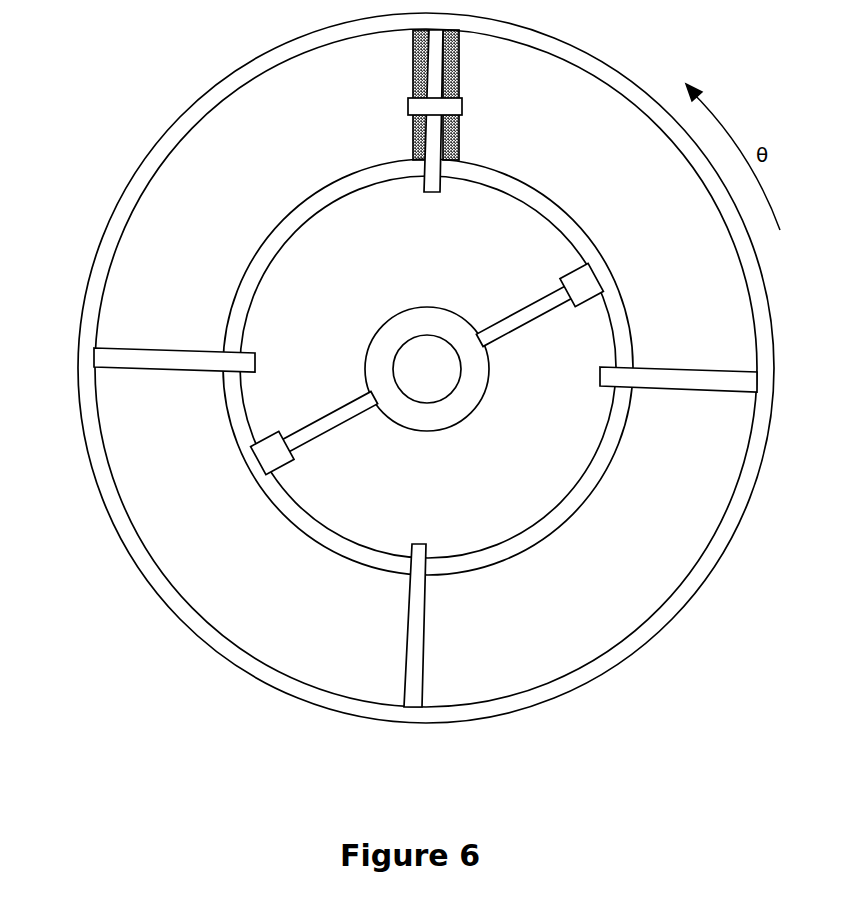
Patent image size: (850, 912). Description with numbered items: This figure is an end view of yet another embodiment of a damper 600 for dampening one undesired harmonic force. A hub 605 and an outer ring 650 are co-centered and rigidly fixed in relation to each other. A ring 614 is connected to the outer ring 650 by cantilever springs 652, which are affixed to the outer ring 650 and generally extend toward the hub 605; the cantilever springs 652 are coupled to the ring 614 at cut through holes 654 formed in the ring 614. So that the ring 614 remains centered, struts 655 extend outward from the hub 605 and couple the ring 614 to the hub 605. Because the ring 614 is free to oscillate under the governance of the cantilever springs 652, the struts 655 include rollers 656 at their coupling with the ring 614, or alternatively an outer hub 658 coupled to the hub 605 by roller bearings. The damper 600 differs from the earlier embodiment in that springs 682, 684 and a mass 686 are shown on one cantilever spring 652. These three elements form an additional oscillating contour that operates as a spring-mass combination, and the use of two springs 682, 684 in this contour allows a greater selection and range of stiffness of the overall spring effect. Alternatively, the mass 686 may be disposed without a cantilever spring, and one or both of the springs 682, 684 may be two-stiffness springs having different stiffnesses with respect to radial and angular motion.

The damper 600 is at (430, 799).
The hub 605 is at (427, 369).
The ring 614 is at (460, 160).
The outer ring 650 is at (140, 535).
The cantilever spring 652 is at (444, 67).
The cut through hole 654 is at (433, 165).
The strut 655 is at (510, 334).
The roller 656 is at (562, 277).
The outer hub 658 is at (431, 306).
The spring 682 is at (415, 129).
The spring 684 is at (421, 87).
The mass 686 is at (462, 105).